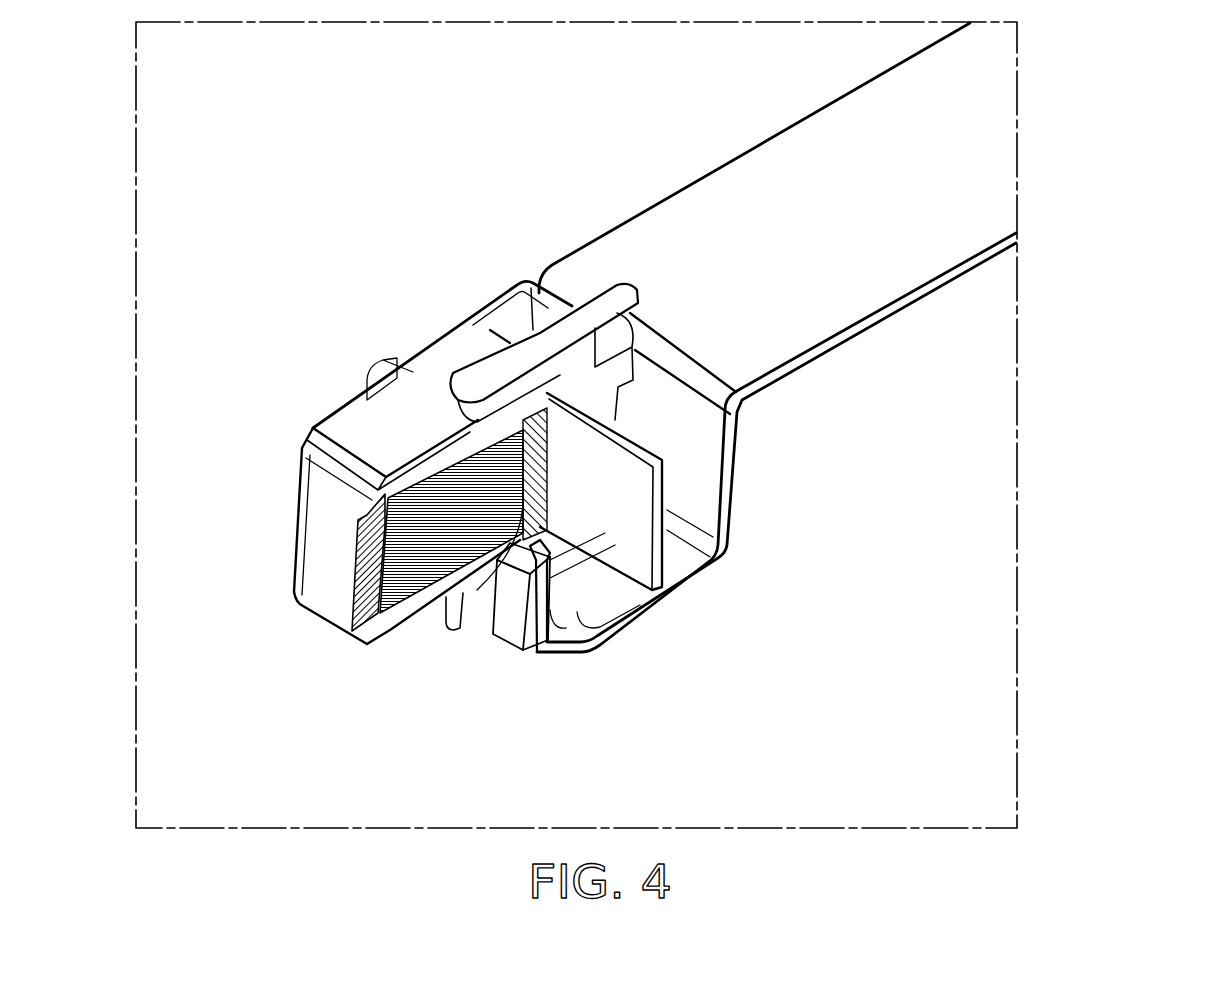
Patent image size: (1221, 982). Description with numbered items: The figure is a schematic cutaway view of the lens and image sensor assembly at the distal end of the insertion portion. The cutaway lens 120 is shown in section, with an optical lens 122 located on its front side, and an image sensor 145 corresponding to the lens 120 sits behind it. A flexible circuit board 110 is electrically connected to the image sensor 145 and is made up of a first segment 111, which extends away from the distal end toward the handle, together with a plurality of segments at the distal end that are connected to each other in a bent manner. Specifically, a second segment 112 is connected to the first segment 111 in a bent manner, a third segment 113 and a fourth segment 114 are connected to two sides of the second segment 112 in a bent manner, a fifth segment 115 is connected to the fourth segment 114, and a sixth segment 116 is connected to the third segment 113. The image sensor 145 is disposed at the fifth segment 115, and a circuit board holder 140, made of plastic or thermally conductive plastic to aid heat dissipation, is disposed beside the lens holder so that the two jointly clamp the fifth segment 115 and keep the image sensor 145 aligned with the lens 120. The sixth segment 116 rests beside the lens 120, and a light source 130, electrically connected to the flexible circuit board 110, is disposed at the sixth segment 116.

The flexible circuit board 110 is at (759, 369).
The first segment 111 is at (760, 172).
The second segment 112 is at (740, 474).
The third segment 113 is at (683, 587).
The fourth segment 114 is at (490, 295).
The fifth segment 115 is at (630, 568).
The sixth segment 116 is at (549, 612).
The lens 120 is at (410, 578).
The optical lens 122 is at (333, 585).
The light source 130 is at (513, 627).
The circuit board holder 140 is at (548, 268).
The image sensor 145 is at (510, 513).